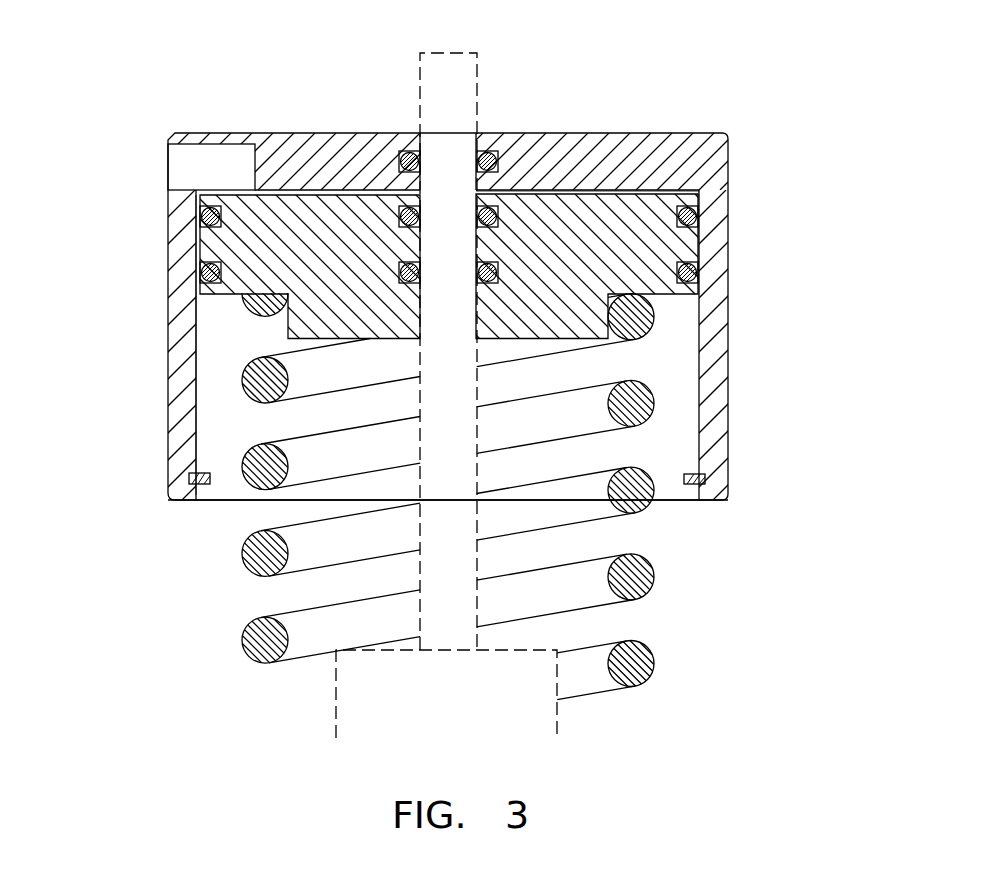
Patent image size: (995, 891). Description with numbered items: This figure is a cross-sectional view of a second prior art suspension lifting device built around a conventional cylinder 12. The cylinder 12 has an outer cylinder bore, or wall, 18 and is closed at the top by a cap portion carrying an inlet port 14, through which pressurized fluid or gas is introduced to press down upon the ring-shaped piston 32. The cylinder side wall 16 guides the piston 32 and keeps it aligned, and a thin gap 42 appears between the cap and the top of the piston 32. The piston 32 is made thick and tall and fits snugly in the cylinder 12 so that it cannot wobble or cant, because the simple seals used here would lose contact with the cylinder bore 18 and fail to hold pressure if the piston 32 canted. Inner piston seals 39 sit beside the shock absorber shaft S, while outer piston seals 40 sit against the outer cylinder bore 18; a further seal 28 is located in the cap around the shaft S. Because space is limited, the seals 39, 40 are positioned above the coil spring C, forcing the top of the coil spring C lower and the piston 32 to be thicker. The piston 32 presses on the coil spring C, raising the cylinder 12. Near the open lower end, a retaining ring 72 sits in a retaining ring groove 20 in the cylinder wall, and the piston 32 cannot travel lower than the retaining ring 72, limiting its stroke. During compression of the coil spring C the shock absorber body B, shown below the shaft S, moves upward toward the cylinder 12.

The cylinder 12 is at (304, 157).
The inlet port 14 is at (189, 165).
The housing side wall 16 is at (168, 330).
The outer cylinder bore (wall) 18 is at (198, 355).
The retaining ring groove 20 is at (705, 482).
The rod seal 28 is at (495, 149).
The piston 32 is at (667, 207).
The inner piston seals 39 is at (488, 272).
The outer piston seals 40 is at (688, 272).
The piston top surface 42 is at (609, 193).
The retaining ring 72 is at (200, 478).
The shock absorber shaft S is at (464, 80).
The shock absorber body B is at (558, 672).
The coil spring C is at (631, 403).